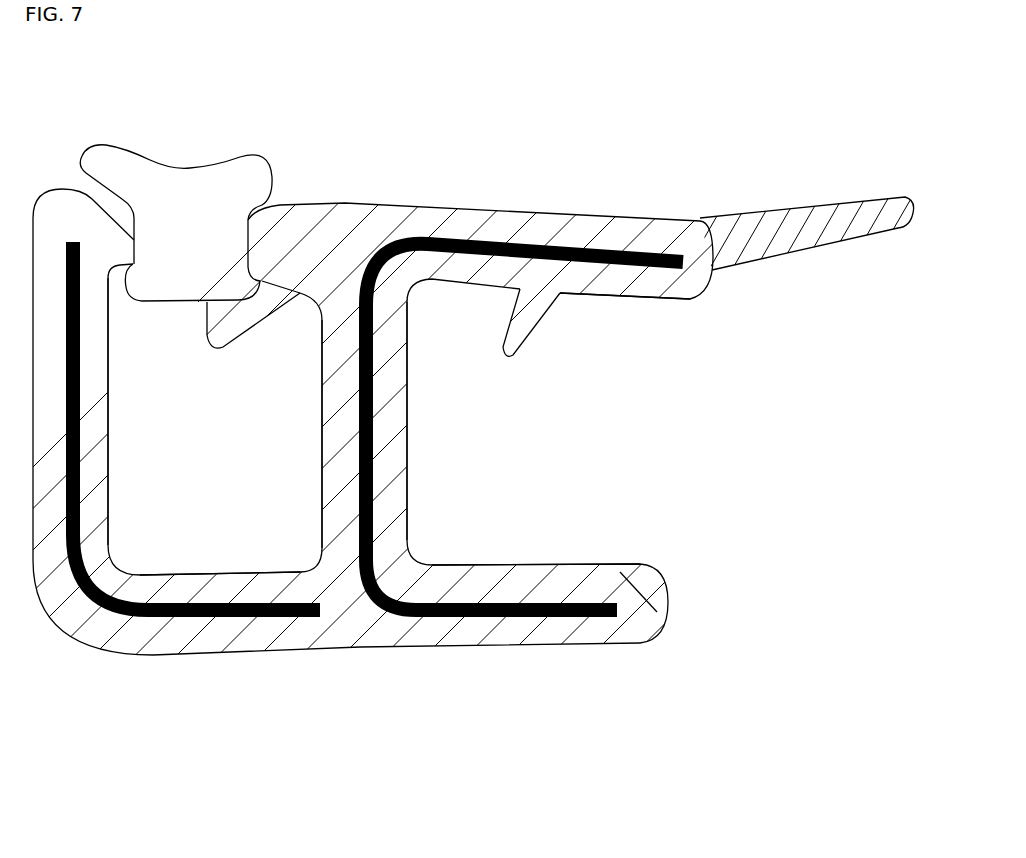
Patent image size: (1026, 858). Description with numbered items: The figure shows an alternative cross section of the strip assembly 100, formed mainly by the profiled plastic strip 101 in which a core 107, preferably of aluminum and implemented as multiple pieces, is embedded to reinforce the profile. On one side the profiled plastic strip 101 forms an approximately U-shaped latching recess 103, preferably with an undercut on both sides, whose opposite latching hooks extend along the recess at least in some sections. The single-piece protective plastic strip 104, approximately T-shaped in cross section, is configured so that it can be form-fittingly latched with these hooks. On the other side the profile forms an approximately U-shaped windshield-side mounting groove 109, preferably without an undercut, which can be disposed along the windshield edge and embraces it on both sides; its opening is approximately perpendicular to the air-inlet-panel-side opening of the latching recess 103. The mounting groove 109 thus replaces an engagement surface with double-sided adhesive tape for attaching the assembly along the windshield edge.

The strip assembly 100 is at (513, 378).
The profiled plastic strip 101 is at (372, 210).
The latching recess 103 is at (259, 466).
The protective plastic strip 104 is at (204, 226).
The core 107 is at (297, 622).
The mounting groove 109 is at (614, 466).